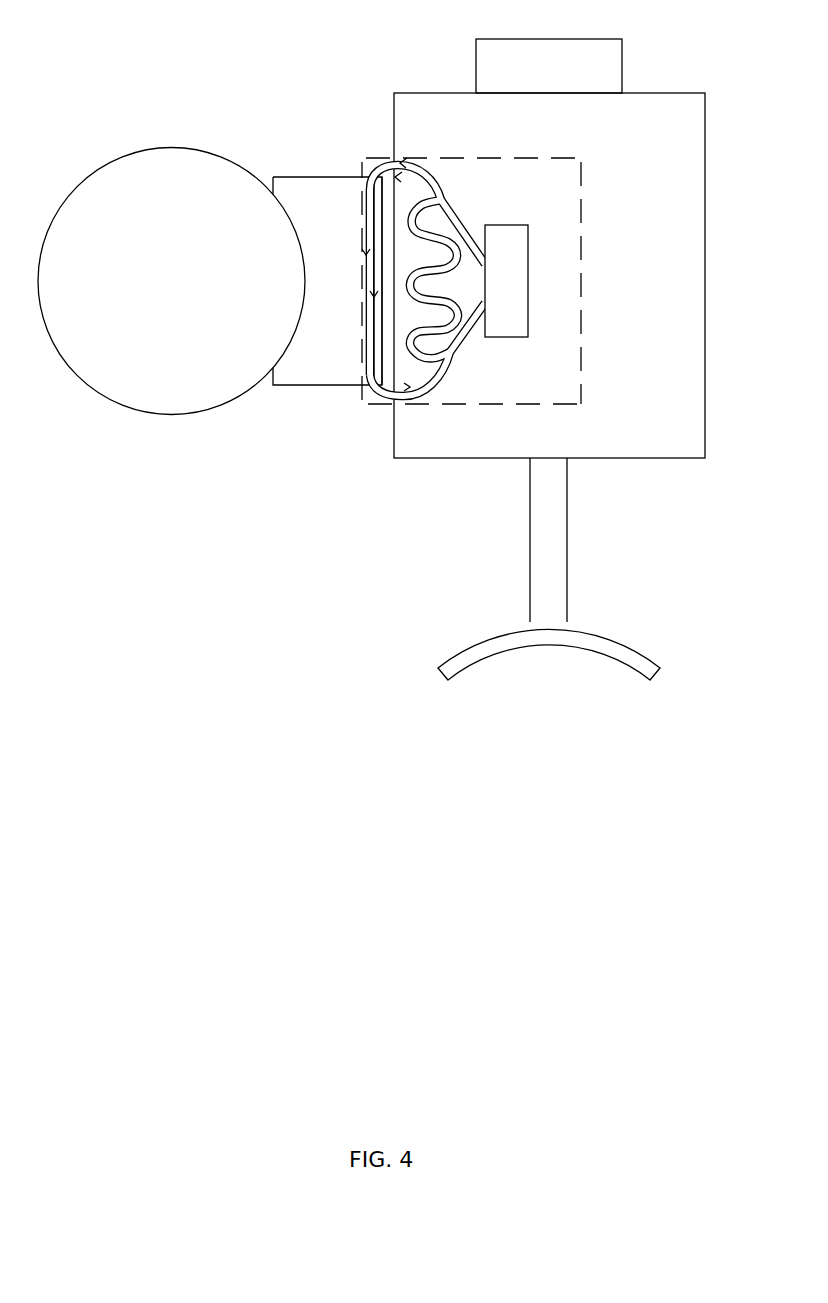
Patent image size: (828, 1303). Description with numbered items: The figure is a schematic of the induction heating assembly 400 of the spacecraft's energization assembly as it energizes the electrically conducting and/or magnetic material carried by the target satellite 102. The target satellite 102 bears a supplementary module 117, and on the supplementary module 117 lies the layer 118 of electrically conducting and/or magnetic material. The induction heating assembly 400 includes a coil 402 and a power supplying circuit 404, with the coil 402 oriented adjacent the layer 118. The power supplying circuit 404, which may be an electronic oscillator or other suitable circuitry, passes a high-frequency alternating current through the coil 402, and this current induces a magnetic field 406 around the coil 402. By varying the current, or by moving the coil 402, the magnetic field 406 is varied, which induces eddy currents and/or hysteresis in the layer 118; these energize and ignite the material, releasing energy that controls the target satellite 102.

The target satellite 102 is at (193, 294).
The supplementary module 117 is at (292, 177).
The layer of electrically conducting and/or magnetic material 118 is at (372, 372).
The induction heating assembly 400 is at (384, 154).
The coil 402 is at (466, 216).
The power supplying circuit 404 is at (524, 283).
The magnetic field 406 is at (377, 392).